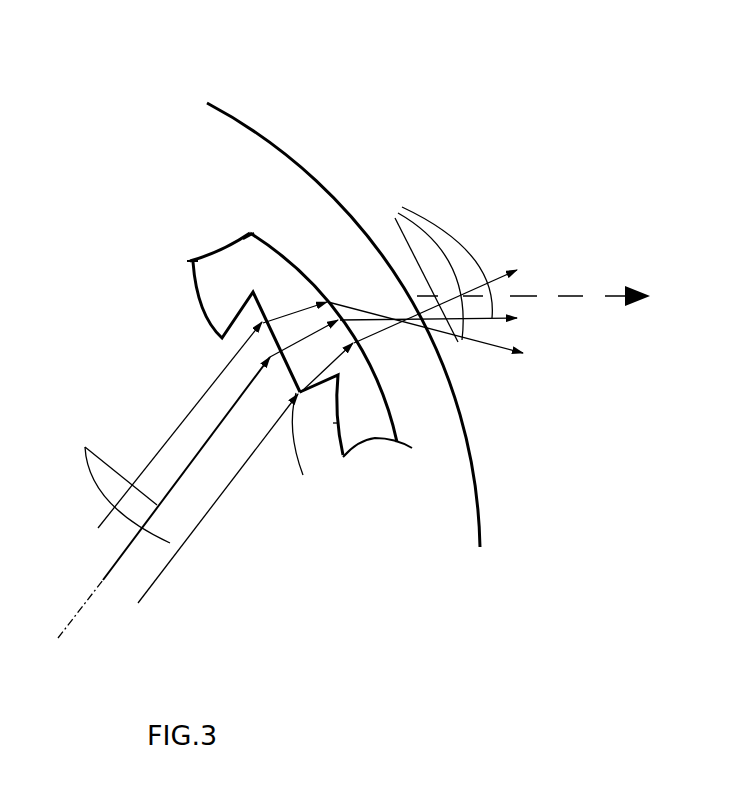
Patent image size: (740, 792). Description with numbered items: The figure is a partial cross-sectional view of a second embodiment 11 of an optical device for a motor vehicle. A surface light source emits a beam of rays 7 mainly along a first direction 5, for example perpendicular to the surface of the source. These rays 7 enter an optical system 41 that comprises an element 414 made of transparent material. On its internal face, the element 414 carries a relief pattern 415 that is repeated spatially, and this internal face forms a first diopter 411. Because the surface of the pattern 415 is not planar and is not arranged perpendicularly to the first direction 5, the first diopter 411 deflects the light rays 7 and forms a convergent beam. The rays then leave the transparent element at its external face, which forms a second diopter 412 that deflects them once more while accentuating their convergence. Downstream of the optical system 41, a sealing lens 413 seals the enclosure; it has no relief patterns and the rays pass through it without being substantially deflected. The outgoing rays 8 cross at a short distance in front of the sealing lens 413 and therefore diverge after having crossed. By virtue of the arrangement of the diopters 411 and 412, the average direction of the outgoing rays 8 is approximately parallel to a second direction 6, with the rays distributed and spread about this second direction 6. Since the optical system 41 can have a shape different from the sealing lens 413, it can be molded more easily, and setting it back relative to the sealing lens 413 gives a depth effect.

The first direction 5 is at (92, 597).
The second direction 6 is at (538, 295).
The beam of rays 7 is at (150, 458).
The outgoing rays 8 is at (439, 271).
The second embodiment of the optical device 11 is at (130, 290).
The optical system 41 is at (228, 185).
The first diopter 411 is at (200, 310).
The second diopter 412 is at (283, 250).
The sealing lens 413 is at (297, 157).
The element made of transparent material 414 is at (365, 437).
The relief pattern 415 is at (338, 423).